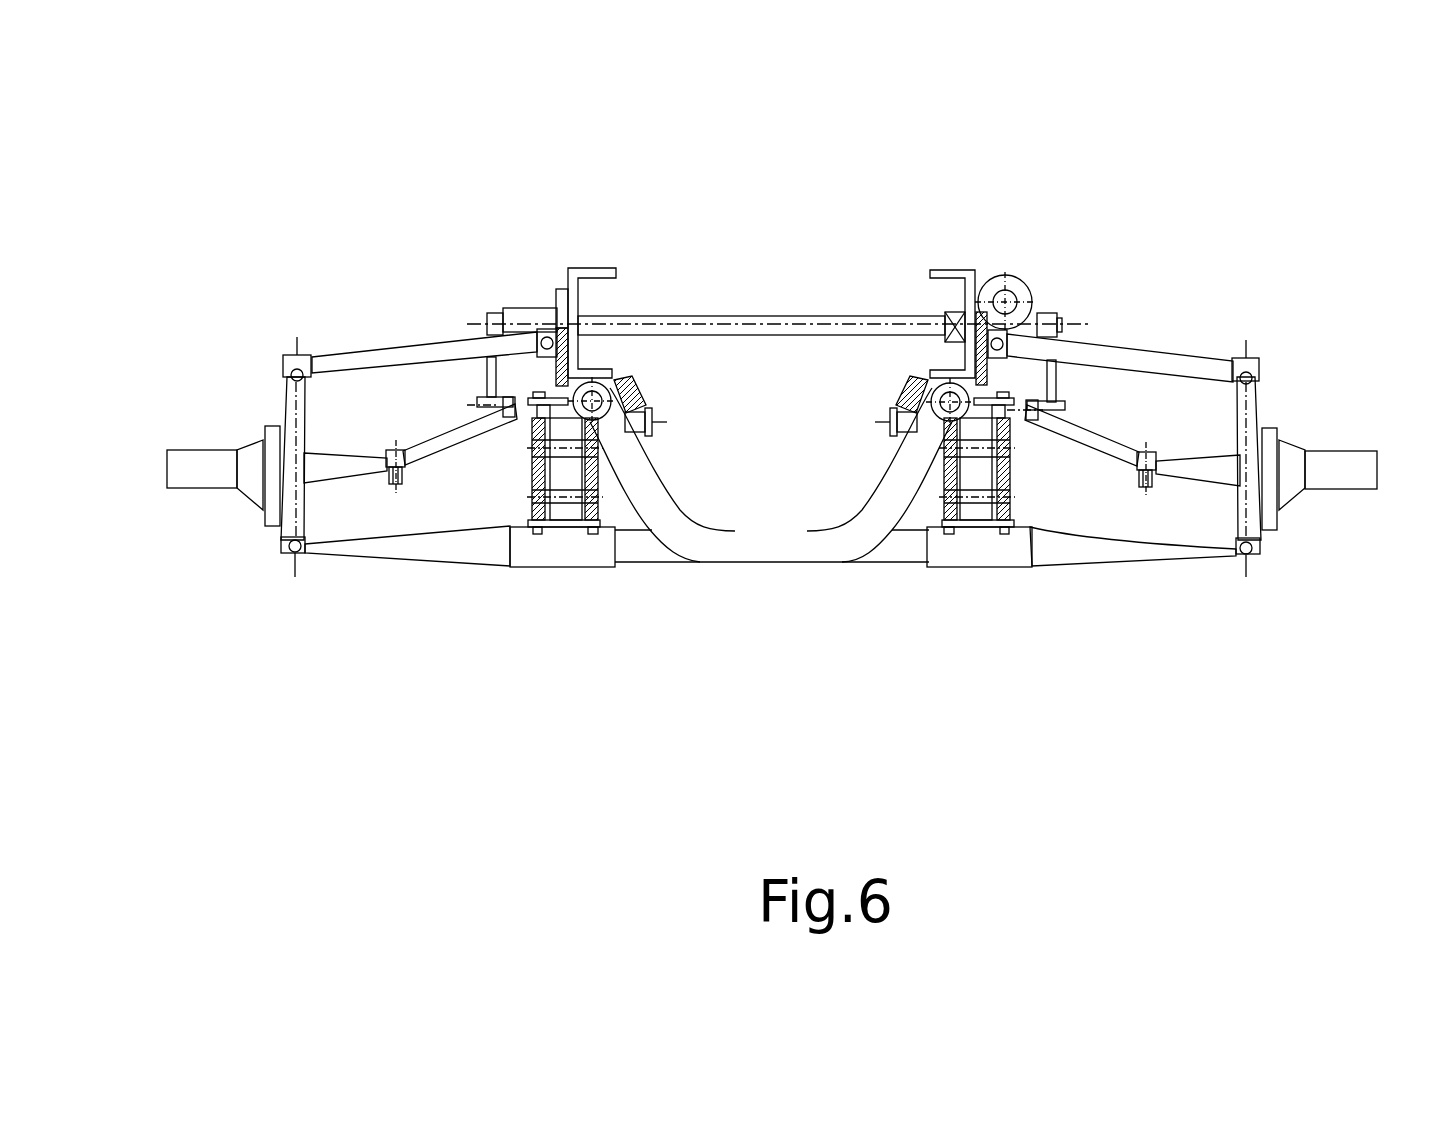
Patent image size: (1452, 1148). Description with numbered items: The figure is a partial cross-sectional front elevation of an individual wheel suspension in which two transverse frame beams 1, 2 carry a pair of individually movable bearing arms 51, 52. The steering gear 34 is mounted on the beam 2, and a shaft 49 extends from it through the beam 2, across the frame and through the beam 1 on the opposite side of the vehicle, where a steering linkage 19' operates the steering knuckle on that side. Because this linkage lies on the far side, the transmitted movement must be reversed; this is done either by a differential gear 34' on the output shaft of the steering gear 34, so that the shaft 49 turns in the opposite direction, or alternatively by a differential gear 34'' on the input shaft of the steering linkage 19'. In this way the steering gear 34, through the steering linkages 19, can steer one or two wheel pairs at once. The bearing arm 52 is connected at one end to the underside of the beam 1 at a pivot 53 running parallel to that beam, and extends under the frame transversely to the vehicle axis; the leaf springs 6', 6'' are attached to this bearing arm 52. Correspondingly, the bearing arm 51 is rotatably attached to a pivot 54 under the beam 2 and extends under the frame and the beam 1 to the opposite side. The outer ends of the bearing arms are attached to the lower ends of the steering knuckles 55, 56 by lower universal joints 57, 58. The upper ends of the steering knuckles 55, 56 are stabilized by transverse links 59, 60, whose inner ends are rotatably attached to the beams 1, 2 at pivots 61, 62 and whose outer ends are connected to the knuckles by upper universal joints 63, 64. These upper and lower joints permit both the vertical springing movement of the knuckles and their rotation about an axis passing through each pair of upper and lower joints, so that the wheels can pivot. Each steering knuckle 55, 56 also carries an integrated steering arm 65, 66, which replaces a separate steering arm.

The beam 1 is at (598, 268).
The beam 2 is at (965, 268).
The leaf spring 6' is at (1049, 578).
The leaf spring 6'' is at (974, 584).
The steering linkage 19 is at (1168, 239).
The steering linkage 19' is at (382, 243).
The steering gear 34 is at (1069, 234).
The differential gear 34' is at (927, 239).
The differential gear 34'' is at (502, 240).
The shaft 49 is at (725, 316).
The bearing arm 51 is at (537, 550).
The bearing arm 52 is at (953, 557).
The pivot 53 is at (615, 378).
The pivot 54 is at (1093, 338).
The steering knuckle 55 is at (224, 457).
The steering knuckle 56 is at (1337, 481).
The universal joint 57 is at (285, 552).
The universal joint 58 is at (1252, 554).
The transverse link 59 is at (357, 360).
The transverse link 60 is at (1133, 357).
The pivot 61 is at (541, 320).
The pivot 62 is at (1007, 335).
The universal joint 63 is at (283, 365).
The universal joint 64 is at (1262, 368).
The steering arm 65 is at (347, 471).
The steering arm 66 is at (1200, 473).